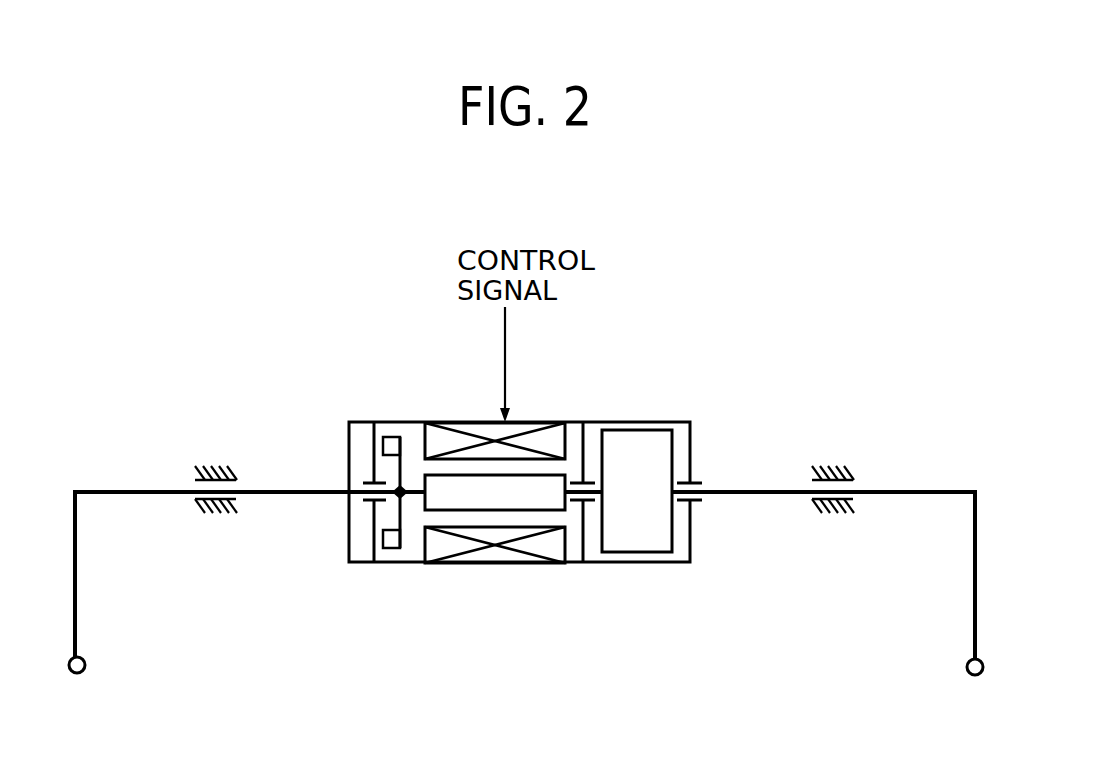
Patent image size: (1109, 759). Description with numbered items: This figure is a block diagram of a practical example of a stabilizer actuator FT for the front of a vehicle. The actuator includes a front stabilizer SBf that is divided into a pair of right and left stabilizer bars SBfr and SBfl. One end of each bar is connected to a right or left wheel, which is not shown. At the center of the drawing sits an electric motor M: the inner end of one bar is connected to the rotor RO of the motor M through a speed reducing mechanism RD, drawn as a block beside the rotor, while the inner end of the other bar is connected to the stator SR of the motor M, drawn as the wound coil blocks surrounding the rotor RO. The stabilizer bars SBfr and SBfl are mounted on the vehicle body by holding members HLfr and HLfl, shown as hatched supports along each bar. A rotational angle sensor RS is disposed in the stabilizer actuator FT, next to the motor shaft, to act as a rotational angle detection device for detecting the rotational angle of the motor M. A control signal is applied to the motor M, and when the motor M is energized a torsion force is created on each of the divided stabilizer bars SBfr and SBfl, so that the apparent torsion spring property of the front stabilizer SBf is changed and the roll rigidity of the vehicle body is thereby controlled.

The stator SR is at (447, 424).
The rotor RO is at (565, 475).
The stabilizer actuator FT is at (640, 422).
The electric motor M is at (481, 516).
The rotational angle sensor RS is at (393, 543).
The speed reducing mechanism RD is at (647, 553).
The holding member HLfl is at (216, 471).
The holding member HLfr is at (834, 472).
The left stabilizer bar SBfl is at (120, 495).
The right stabilizer bar SBfr is at (735, 497).
The front stabilizer SBf is at (736, 566).